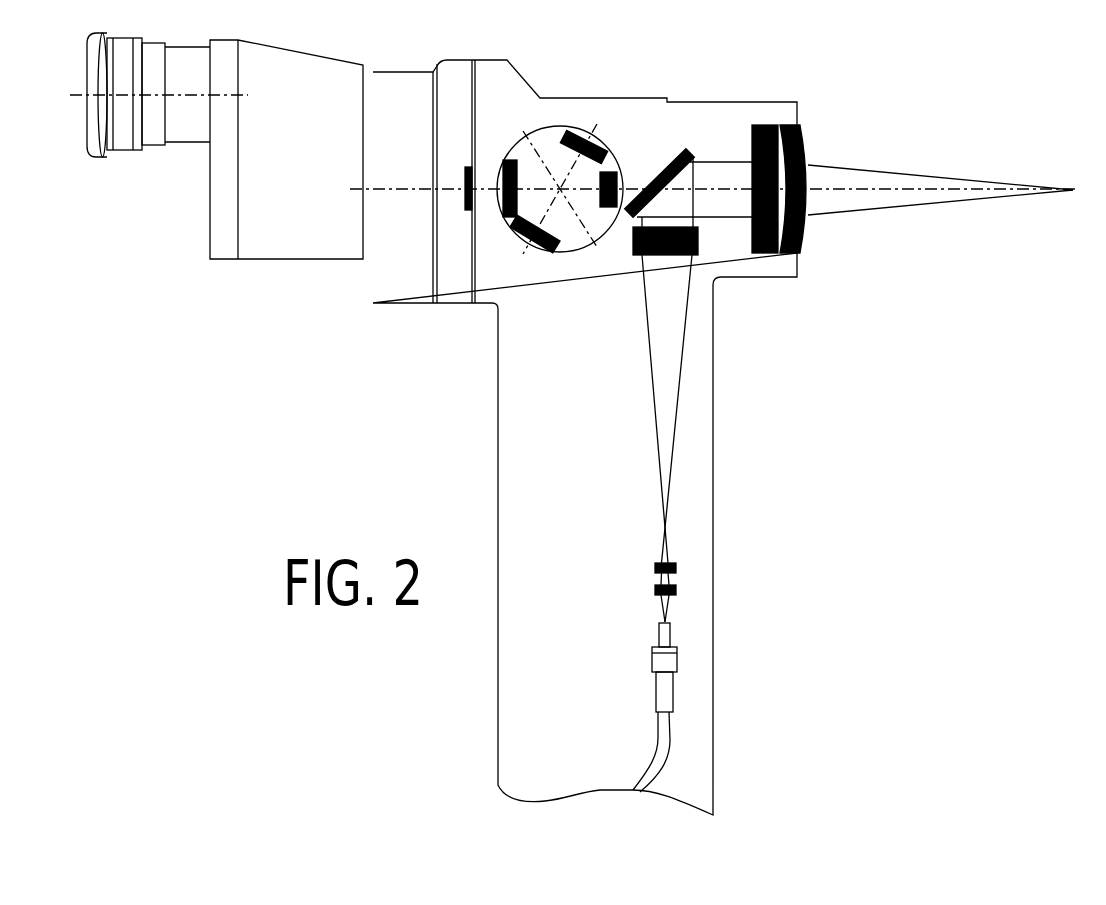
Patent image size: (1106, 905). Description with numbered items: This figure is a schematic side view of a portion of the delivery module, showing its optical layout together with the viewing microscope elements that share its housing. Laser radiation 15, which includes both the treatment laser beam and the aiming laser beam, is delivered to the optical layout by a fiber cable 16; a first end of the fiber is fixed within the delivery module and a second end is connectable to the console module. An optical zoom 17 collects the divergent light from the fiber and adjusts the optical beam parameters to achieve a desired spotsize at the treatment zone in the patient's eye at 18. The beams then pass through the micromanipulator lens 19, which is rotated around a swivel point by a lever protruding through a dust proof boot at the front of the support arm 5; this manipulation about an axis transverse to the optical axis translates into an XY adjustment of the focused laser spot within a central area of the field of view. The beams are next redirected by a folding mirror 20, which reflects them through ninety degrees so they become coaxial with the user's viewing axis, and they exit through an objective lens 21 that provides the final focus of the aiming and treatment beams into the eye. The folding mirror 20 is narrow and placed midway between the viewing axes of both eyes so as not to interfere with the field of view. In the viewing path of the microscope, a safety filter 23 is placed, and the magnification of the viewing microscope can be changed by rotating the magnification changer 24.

The support arm 5 is at (705, 462).
The laser radiation 15 is at (673, 608).
The fiber cable 16 is at (678, 748).
The optical zoom 17 is at (683, 575).
The treatment zone 18 is at (1070, 187).
The micromanipulator lens 19 is at (703, 245).
The folding mirror 20 is at (687, 145).
The objective lens 21 is at (805, 121).
The safety filter 23 is at (462, 215).
The magnification changer 24 is at (574, 128).